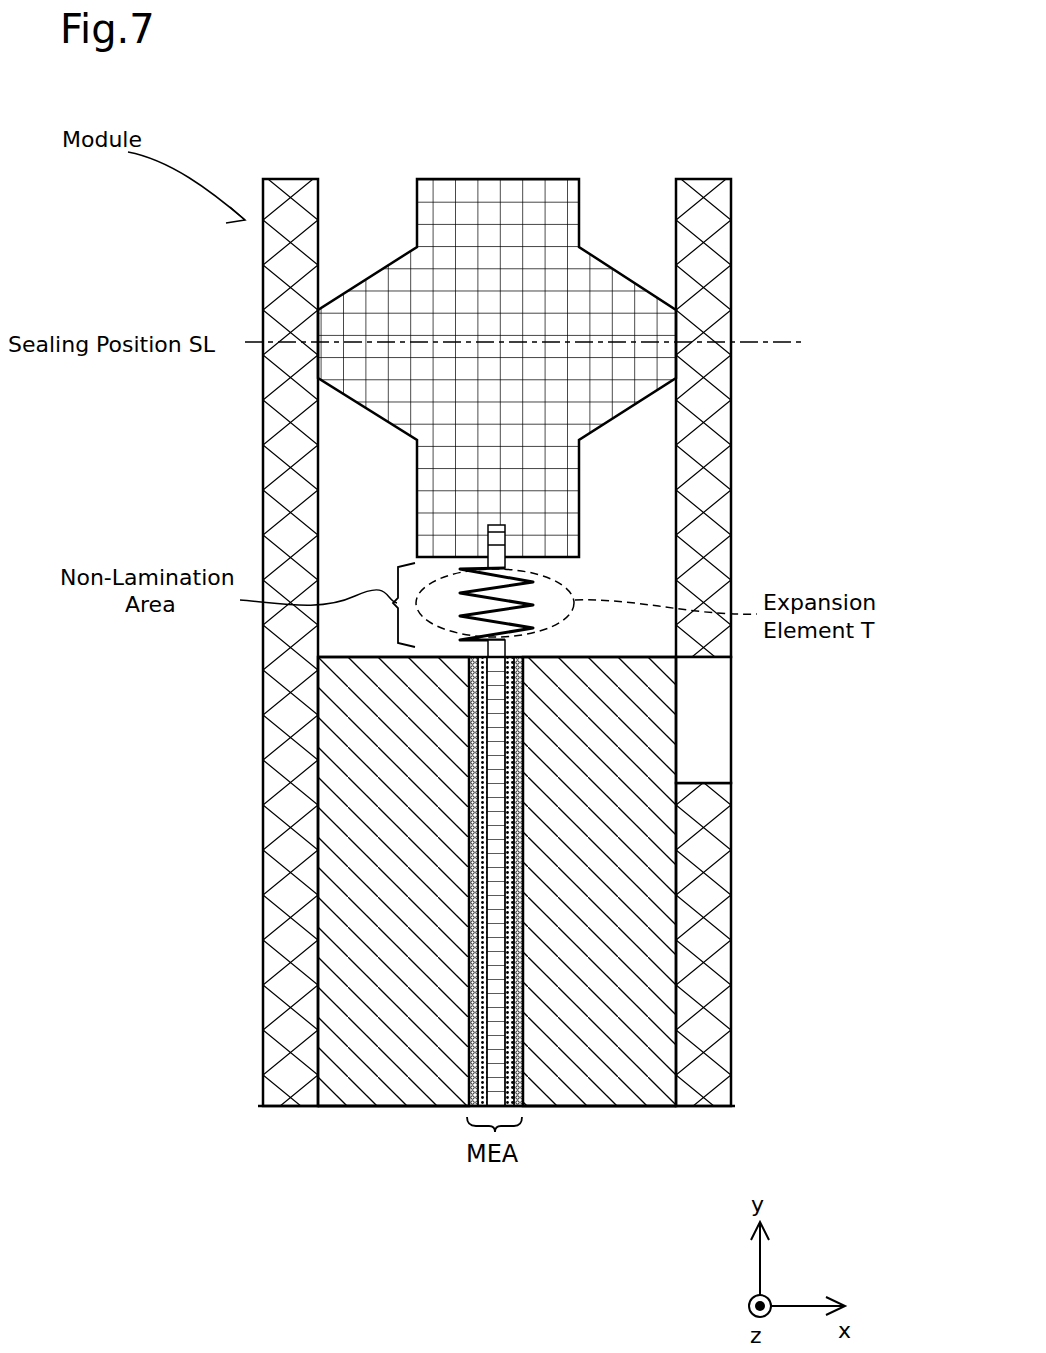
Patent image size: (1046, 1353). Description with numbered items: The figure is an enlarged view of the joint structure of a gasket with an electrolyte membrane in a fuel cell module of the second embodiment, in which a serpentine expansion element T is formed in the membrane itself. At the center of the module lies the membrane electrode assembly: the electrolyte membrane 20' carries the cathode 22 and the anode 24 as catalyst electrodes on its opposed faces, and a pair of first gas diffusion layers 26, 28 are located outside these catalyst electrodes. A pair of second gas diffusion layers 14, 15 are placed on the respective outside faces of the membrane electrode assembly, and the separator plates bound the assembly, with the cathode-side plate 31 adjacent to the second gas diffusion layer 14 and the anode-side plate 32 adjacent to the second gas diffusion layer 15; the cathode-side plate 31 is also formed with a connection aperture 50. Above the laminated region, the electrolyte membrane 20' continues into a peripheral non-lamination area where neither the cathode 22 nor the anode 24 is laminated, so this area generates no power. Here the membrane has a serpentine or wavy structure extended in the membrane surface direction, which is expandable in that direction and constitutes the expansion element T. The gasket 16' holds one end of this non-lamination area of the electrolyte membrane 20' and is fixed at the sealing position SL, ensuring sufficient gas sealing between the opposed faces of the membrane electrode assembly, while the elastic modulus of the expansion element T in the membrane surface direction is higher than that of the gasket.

The second gas diffusion layer 14 is at (600, 933).
The second gas diffusion layer 15 is at (367, 1012).
The gasket 16' is at (583, 373).
The electrolyte membrane 20' is at (681, 881).
The cathode 22 is at (525, 728).
The anode 24 is at (469, 843).
The first gas diffusion layer 26 is at (525, 798).
The first gas diffusion layer 28 is at (469, 905).
The cathode-side plate 31 is at (700, 1031).
The anode-side plate 32 is at (293, 1077).
The connection aperture 50 is at (713, 693).